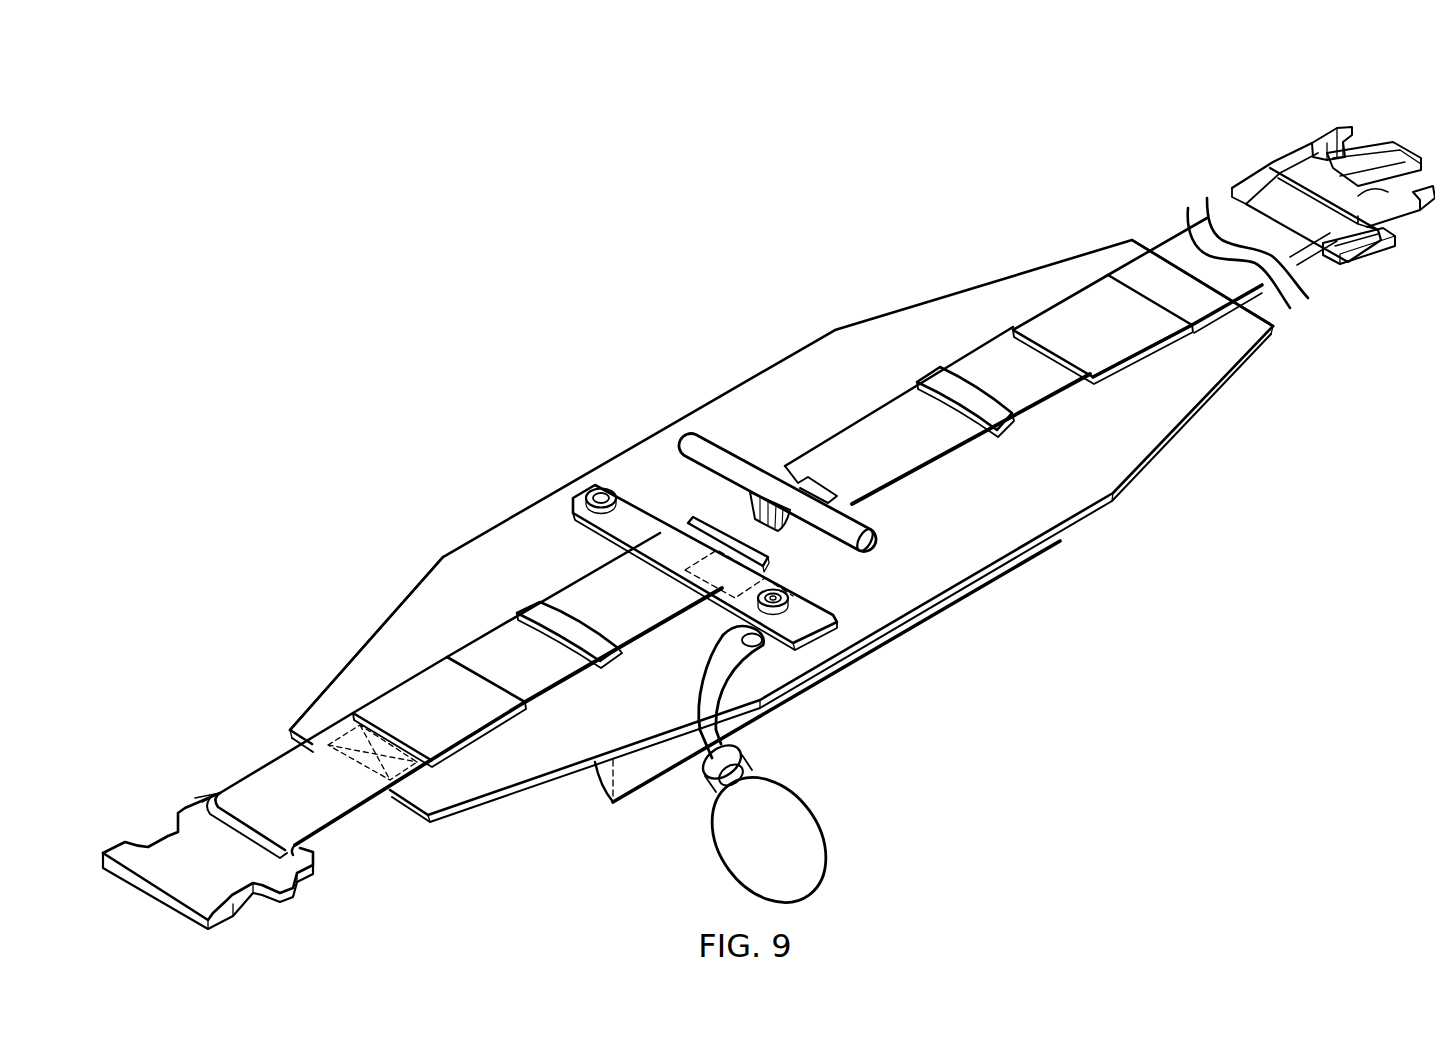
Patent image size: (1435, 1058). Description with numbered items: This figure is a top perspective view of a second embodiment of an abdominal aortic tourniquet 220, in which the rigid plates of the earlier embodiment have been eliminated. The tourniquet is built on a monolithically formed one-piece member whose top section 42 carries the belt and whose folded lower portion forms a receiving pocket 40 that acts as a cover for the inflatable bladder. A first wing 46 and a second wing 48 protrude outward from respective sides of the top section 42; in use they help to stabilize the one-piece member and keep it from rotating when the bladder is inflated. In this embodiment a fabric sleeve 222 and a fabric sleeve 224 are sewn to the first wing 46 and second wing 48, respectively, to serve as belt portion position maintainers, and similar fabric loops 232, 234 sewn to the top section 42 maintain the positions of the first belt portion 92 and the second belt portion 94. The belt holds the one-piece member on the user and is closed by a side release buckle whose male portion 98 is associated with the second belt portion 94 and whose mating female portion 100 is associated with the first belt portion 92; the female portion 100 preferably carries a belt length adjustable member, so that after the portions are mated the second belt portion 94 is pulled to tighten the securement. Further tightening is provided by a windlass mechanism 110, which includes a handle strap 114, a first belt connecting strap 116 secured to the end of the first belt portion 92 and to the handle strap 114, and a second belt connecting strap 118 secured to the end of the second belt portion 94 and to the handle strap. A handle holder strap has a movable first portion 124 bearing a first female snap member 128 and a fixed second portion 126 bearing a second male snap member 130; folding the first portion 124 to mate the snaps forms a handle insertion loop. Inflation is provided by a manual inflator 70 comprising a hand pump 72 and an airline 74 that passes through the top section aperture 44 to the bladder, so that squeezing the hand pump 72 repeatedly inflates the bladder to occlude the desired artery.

The receiving pocket 40 is at (630, 776).
The top section 42 is at (660, 446).
The top section aperture 44 is at (812, 688).
The first wing 46 is at (357, 656).
The second wing 48 is at (1032, 290).
The manual inflator 70 is at (691, 813).
The hand pump 72 is at (827, 849).
The airline 74 is at (752, 699).
The first belt portion 92 is at (250, 793).
The second belt portion 94 is at (1267, 210).
The male portion 98 is at (1315, 117).
The female portion 100 is at (145, 828).
The windlass mechanism 110 is at (727, 432).
The handle strap 114 is at (752, 502).
The first belt connecting strap 116 is at (752, 538).
The second belt connecting strap 118 is at (805, 486).
The first portion 124 is at (627, 528).
The second portion 126 is at (748, 611).
The first female snap member 128 is at (585, 491).
The second male snap member 130 is at (888, 656).
The abdominal aortic tourniquet 220 is at (952, 183).
The fabric sleeve 222 is at (416, 721).
The fabric sleeve 224 is at (1076, 343).
The fabric loop 232 is at (527, 618).
The fabric loop 234 is at (1100, 503).